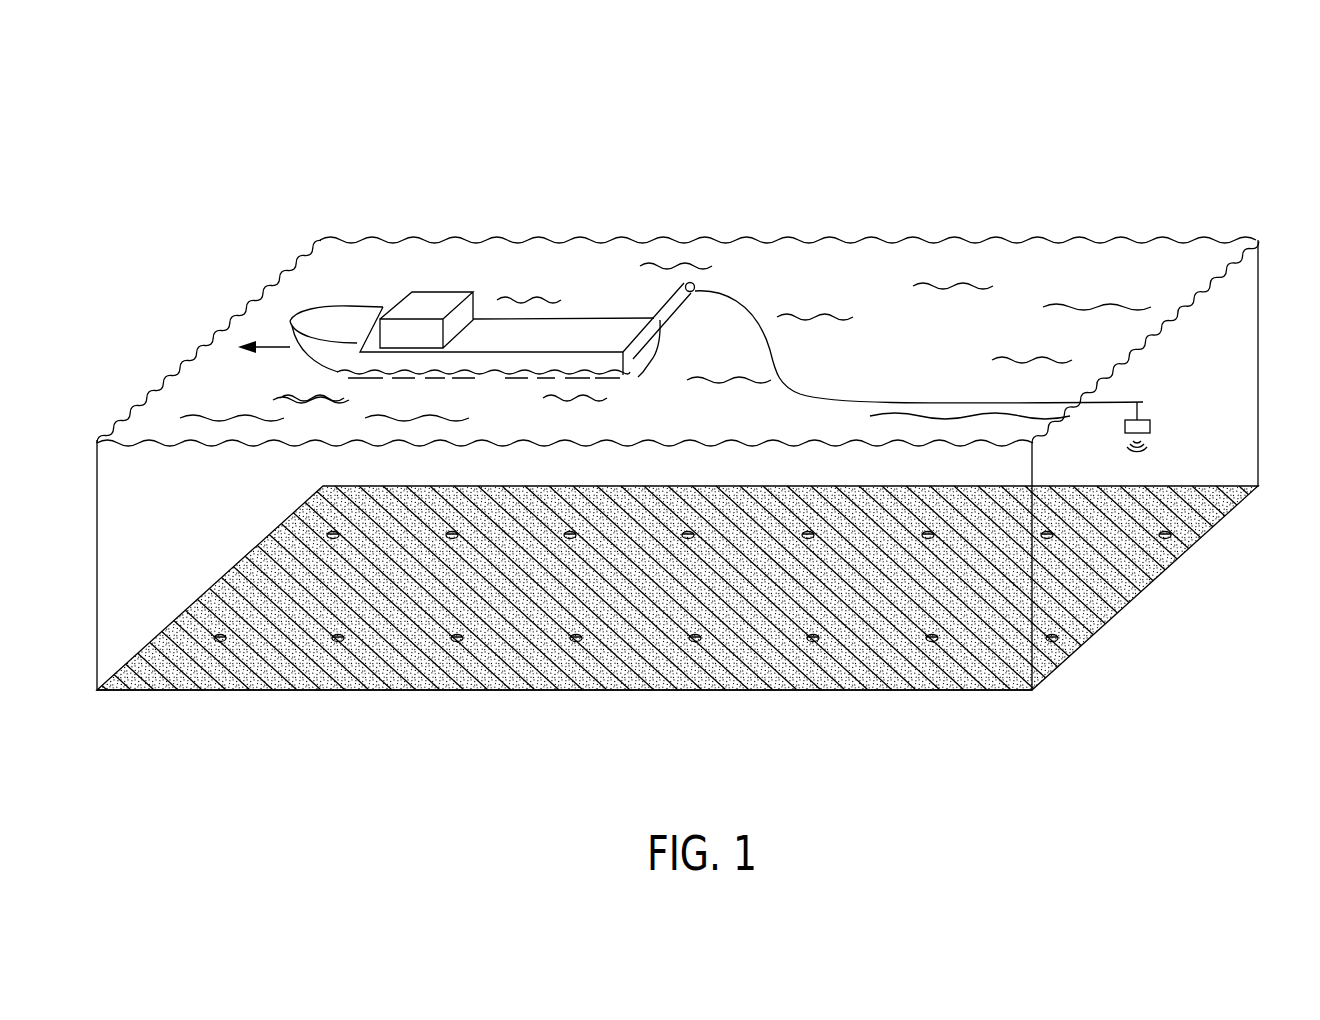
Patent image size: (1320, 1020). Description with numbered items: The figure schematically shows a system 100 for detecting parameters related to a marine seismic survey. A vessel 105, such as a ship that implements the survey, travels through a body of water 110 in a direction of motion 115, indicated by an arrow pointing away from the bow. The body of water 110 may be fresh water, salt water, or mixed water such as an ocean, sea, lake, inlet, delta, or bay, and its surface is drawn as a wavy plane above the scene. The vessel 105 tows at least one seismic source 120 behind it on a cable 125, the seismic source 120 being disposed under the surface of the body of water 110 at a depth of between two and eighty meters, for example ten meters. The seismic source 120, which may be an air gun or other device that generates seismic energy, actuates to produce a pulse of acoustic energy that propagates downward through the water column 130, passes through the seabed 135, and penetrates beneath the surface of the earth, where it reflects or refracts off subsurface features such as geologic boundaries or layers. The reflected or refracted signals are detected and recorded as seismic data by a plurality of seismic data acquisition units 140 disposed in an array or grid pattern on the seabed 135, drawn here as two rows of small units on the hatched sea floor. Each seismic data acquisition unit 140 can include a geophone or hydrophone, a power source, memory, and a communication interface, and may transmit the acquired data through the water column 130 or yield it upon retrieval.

The system 100 is at (262, 154).
The vessel 105 is at (320, 315).
The body of water 110 is at (1165, 258).
The direction of motion 115 is at (272, 347).
The seismic source 120 is at (1152, 425).
The cable 125 is at (772, 358).
The water column 130 is at (1237, 363).
The seabed 135 is at (392, 667).
The seismic data acquisition unit 140 is at (1052, 645).